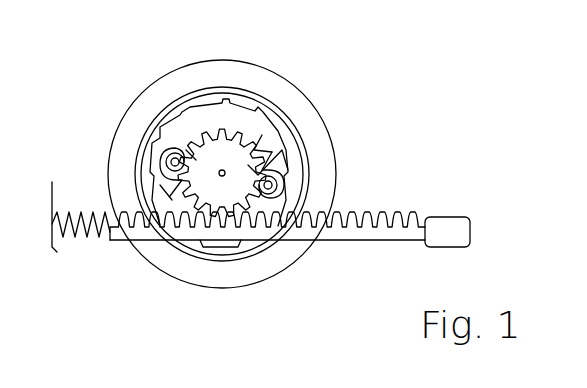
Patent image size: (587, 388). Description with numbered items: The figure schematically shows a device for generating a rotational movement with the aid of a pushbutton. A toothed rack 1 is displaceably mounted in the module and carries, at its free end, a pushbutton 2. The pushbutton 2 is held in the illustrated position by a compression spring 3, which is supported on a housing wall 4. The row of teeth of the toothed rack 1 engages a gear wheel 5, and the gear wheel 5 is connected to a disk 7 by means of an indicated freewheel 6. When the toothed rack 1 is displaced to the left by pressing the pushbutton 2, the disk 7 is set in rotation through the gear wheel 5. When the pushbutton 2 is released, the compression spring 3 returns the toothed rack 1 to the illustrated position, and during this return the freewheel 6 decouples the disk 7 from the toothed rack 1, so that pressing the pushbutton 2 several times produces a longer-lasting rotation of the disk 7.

The toothed rack 1 is at (370, 218).
The pushbutton 2 is at (440, 225).
The compression spring 3 is at (93, 237).
The housing wall 4 is at (57, 252).
The gear wheel 5 is at (270, 155).
The freewheel 6 is at (232, 107).
The disk 7 is at (297, 101).